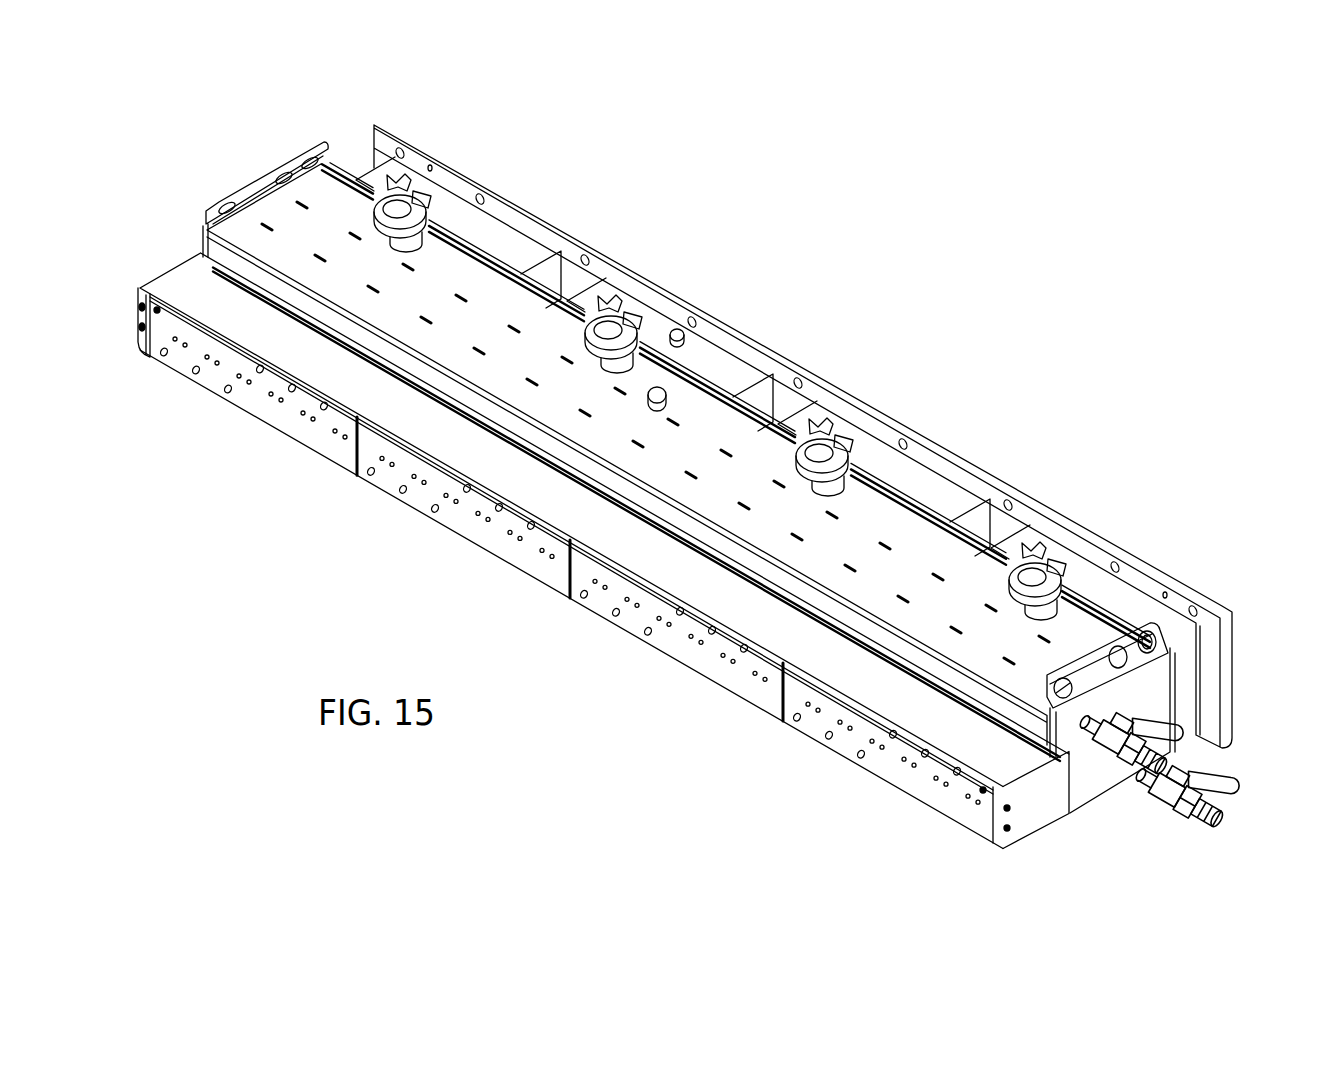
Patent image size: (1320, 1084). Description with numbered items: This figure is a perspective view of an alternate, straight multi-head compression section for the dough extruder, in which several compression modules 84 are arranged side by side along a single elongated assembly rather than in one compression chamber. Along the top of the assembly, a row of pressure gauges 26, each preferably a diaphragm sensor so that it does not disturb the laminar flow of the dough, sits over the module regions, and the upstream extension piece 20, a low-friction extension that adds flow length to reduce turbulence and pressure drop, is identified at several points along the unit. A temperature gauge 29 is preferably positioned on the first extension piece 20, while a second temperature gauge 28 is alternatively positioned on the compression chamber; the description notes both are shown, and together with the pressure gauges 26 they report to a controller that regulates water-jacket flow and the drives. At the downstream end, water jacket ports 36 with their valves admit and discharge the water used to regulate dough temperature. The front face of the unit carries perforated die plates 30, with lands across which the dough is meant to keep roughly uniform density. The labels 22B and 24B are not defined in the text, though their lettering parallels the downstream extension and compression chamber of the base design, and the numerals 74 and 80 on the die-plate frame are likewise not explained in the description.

The upstream extension piece 20 is at (476, 221).
The end cap 22B is at (1032, 823).
The manifold block 24B is at (1087, 807).
The pressure gauge 26 is at (415, 210).
The temperature gauge 28 is at (664, 389).
The temperature gauge 29 is at (678, 327).
The die plate 30 is at (263, 413).
The water jacket ports 36 is at (1200, 812).
The lower frame member 74 is at (737, 690).
The perforated plate 80 is at (845, 735).
The compression modules 84 is at (1076, 484).